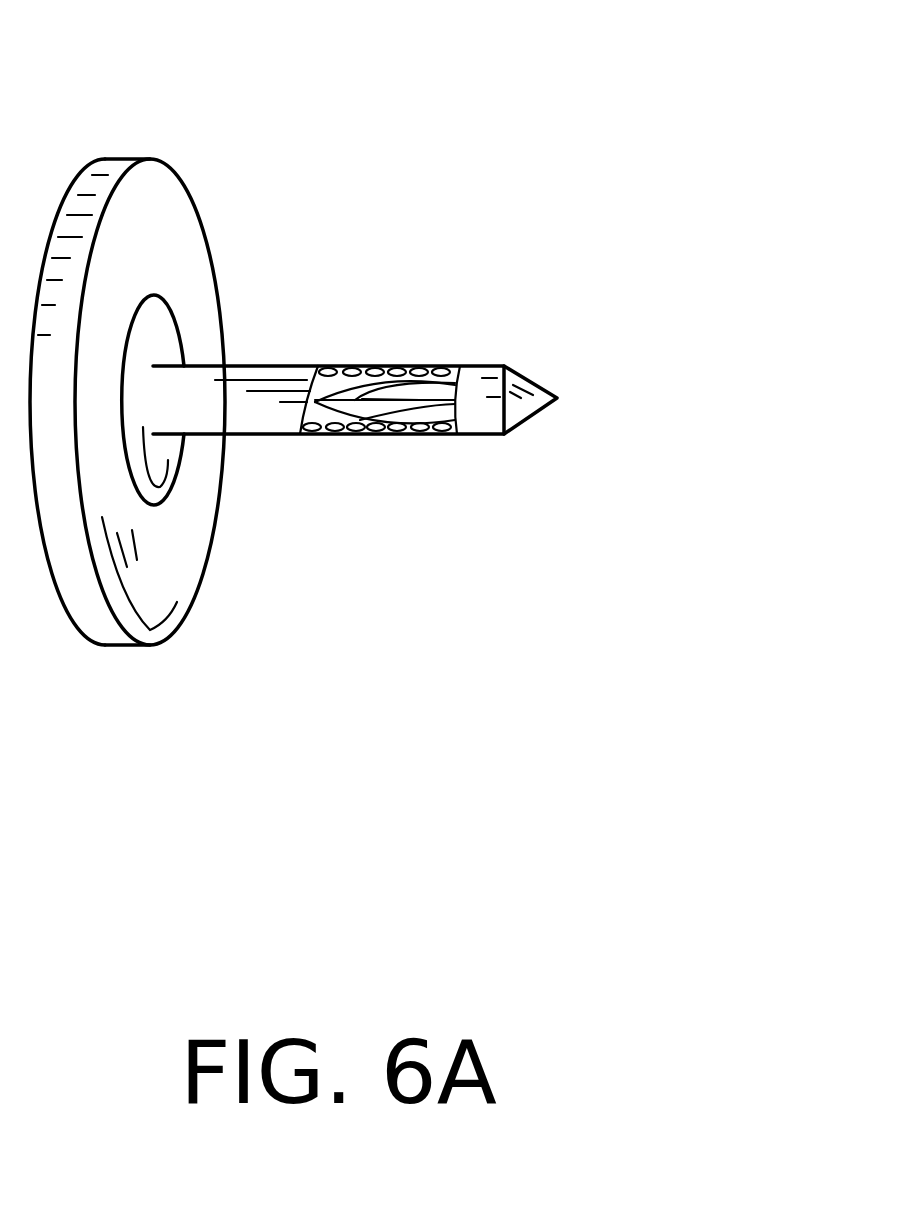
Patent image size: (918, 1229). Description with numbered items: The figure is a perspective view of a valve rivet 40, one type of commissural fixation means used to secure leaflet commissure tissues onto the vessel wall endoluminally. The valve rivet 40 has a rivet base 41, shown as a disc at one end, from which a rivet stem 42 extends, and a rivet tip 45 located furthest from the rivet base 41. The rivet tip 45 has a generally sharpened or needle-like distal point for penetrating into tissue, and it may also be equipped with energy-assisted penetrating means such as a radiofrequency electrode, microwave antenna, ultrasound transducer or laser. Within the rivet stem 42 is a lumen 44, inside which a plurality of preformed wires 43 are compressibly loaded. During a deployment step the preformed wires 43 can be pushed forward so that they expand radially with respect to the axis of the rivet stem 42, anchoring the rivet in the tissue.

The valve rivet 40 is at (375, 200).
The rivet base 41 is at (163, 163).
The rivet stem 42 is at (293, 363).
The preformed wires 43 is at (385, 363).
The lumen 44 is at (393, 433).
The rivet tip 45 is at (540, 413).